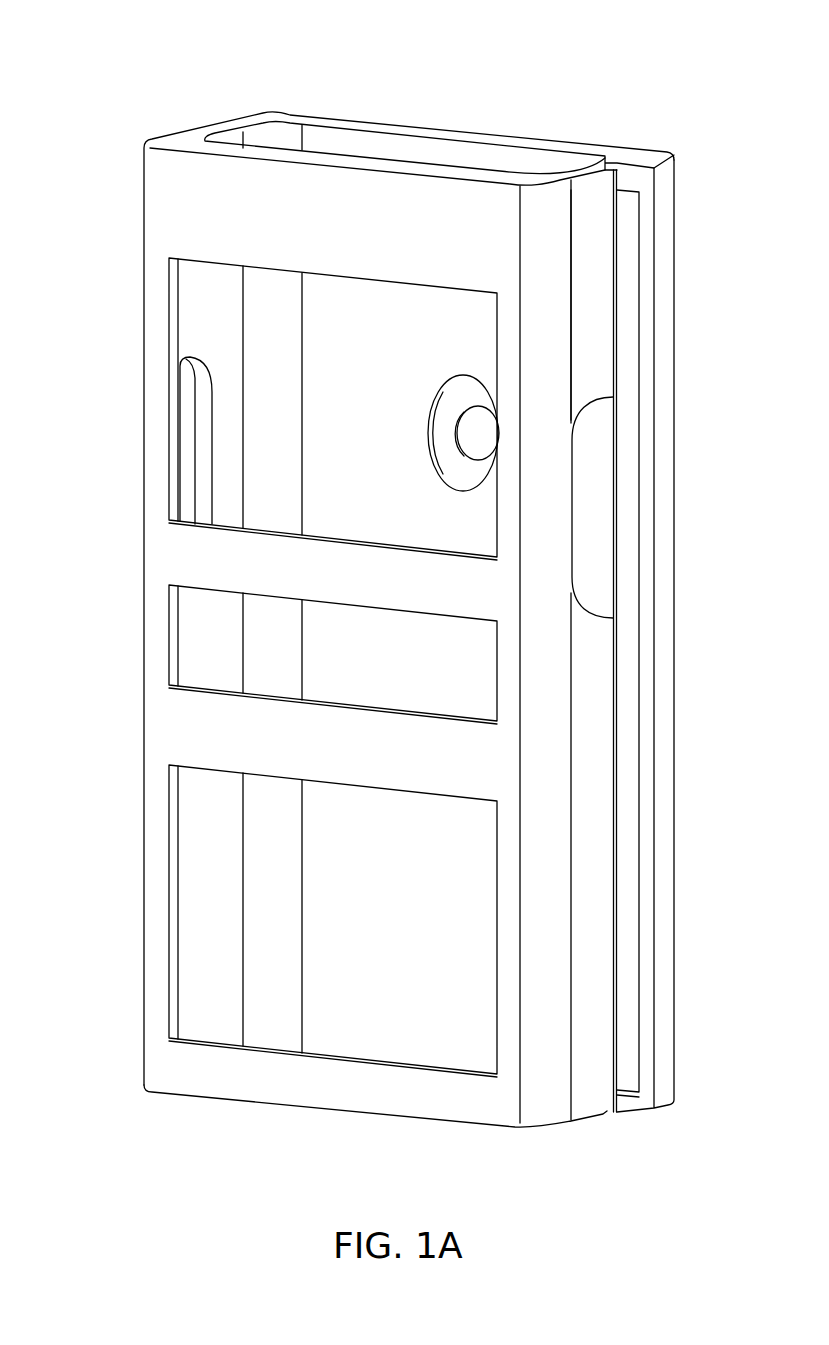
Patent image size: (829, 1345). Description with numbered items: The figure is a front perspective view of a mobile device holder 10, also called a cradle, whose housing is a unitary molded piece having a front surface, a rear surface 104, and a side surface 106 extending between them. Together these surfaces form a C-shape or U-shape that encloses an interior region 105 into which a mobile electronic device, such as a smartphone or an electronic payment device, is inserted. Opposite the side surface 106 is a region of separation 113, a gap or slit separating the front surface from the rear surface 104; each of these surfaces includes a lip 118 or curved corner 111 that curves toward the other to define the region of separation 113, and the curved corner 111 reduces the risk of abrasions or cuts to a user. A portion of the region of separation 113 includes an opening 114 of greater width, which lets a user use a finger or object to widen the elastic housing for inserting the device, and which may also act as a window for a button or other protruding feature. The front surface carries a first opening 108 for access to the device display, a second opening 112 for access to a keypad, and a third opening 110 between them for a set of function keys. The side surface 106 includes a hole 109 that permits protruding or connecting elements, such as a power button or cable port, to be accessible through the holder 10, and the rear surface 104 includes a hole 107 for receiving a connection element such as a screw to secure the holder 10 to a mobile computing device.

The mobile device holder 10 is at (555, 85).
The rear surface 104 is at (597, 148).
The interior region 105 is at (405, 150).
The side surface 106 is at (163, 137).
The hole 107 is at (470, 427).
The first opening 108 is at (230, 308).
The hole 109 is at (187, 416).
The third opening 110 is at (194, 627).
The curved corner 111 is at (562, 270).
The second opening 112 is at (196, 912).
The region of separation 113 is at (643, 692).
The opening 114 is at (620, 488).
The lip 118 is at (605, 1112).